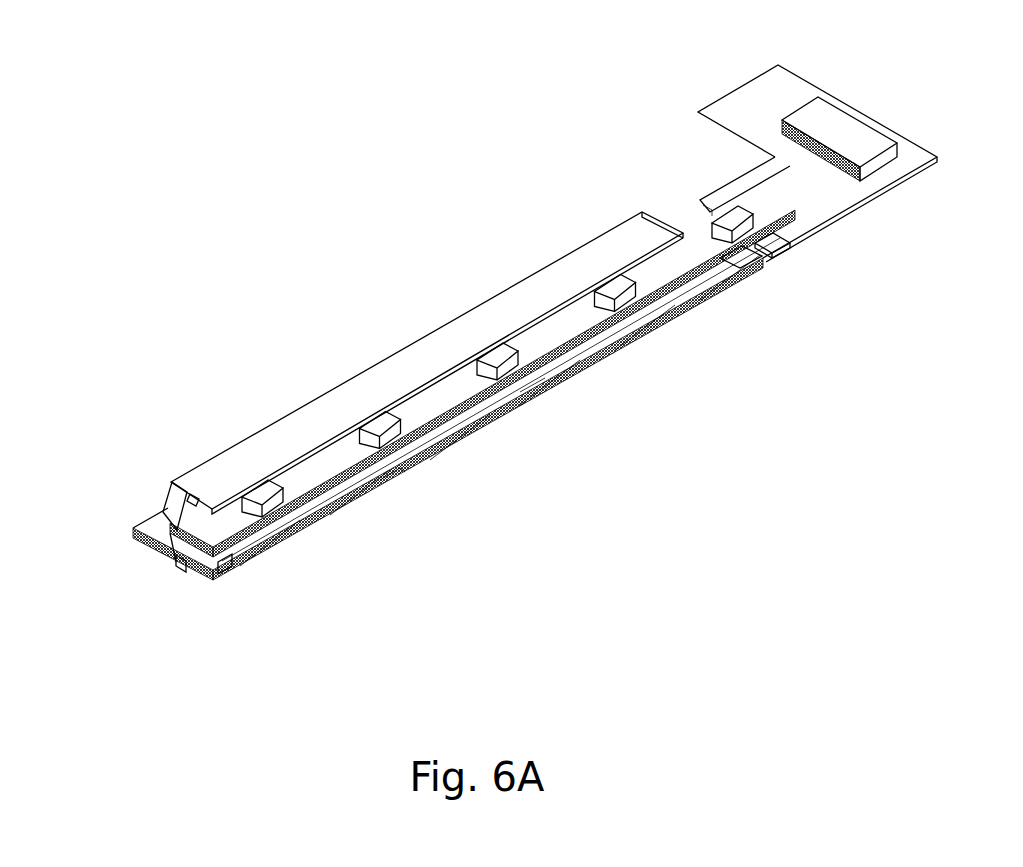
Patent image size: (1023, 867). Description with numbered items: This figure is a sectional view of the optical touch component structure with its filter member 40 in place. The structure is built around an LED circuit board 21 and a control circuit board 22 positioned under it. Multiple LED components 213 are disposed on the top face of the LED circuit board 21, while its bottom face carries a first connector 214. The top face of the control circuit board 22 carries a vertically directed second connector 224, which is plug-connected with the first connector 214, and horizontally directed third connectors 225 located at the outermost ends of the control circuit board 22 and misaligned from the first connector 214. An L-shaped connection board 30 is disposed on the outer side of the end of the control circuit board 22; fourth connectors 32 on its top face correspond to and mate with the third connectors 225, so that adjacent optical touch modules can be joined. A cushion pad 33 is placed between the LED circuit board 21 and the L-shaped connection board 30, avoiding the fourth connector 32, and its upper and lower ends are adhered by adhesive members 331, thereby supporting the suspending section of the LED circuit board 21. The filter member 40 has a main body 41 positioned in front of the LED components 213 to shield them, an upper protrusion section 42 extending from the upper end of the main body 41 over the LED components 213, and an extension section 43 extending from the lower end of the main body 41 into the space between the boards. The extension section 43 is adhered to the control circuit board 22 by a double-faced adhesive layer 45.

The LED circuit board 21 is at (190, 580).
The control circuit board 22 is at (137, 542).
The LED components 213 is at (535, 387).
The first connector 214 is at (390, 477).
The second connector 224 is at (340, 512).
The third connectors 225 is at (737, 264).
The L-shaped connection board 30 is at (748, 102).
The fourth connectors 32 is at (780, 235).
The cushion pad 33 is at (905, 150).
The adhesive members 331 is at (837, 130).
The filter member 40 is at (343, 243).
The main body 41 is at (177, 500).
The upper protrusion section 42 is at (192, 505).
The extension section 43 is at (174, 563).
The adhesive layer 45 is at (228, 578).